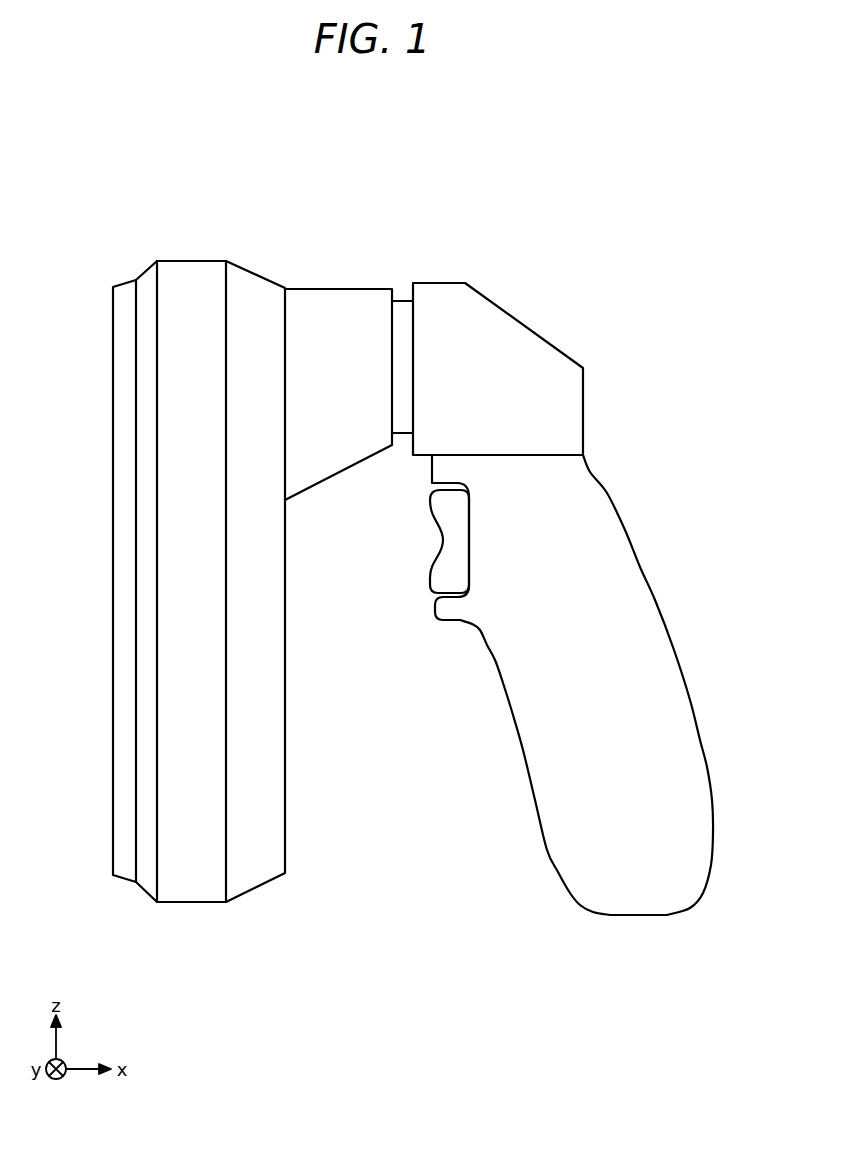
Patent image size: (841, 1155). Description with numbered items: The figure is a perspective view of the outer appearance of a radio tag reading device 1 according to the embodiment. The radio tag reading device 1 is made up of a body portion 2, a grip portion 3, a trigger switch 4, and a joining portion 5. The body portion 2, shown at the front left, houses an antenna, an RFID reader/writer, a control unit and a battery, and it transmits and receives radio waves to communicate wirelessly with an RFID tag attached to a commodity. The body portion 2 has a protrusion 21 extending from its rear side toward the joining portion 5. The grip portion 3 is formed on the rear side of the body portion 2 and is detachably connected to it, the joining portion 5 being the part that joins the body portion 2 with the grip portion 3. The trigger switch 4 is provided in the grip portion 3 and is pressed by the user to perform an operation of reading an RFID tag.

The radio tag reading device 1 is at (270, 158).
The body portion 2 is at (190, 278).
The protrusion 21 is at (349, 288).
The grip portion 3 is at (622, 566).
The trigger switch 4 is at (453, 540).
The joining portion 5 is at (404, 267).